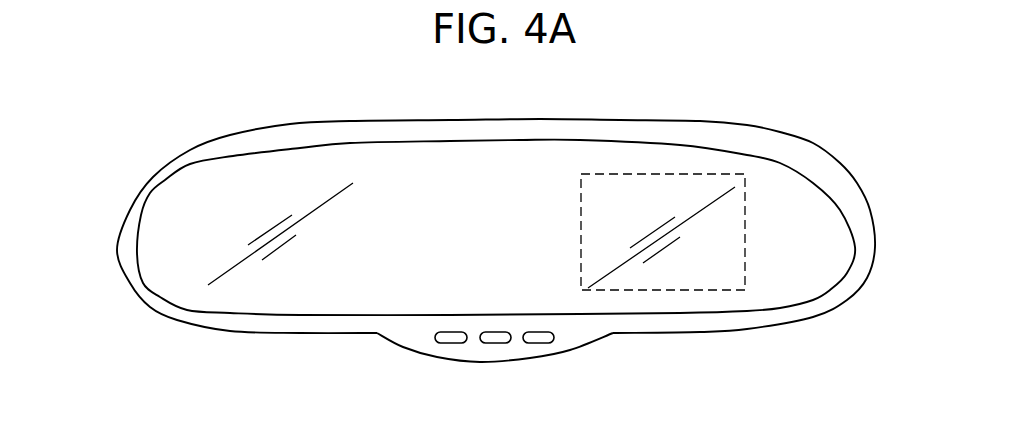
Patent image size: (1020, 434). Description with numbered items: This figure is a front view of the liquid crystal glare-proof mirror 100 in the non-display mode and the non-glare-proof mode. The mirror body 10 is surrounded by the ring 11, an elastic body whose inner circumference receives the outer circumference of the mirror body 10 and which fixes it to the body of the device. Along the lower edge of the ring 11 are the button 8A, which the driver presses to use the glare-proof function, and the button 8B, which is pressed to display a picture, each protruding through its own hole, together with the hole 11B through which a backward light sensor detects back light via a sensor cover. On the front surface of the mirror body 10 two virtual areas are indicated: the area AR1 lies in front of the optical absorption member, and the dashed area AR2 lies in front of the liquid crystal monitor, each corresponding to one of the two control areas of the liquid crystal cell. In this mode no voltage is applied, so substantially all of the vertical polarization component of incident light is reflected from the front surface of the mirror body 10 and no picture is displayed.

The liquid crystal glare-proof mirror 100 is at (768, 123).
The ring 11 is at (823, 177).
The mirror body 10 is at (785, 237).
The area AR1 is at (332, 177).
The area AR2 is at (662, 183).
The hole 11B is at (445, 342).
The button 8A is at (498, 342).
The button 8B is at (547, 342).